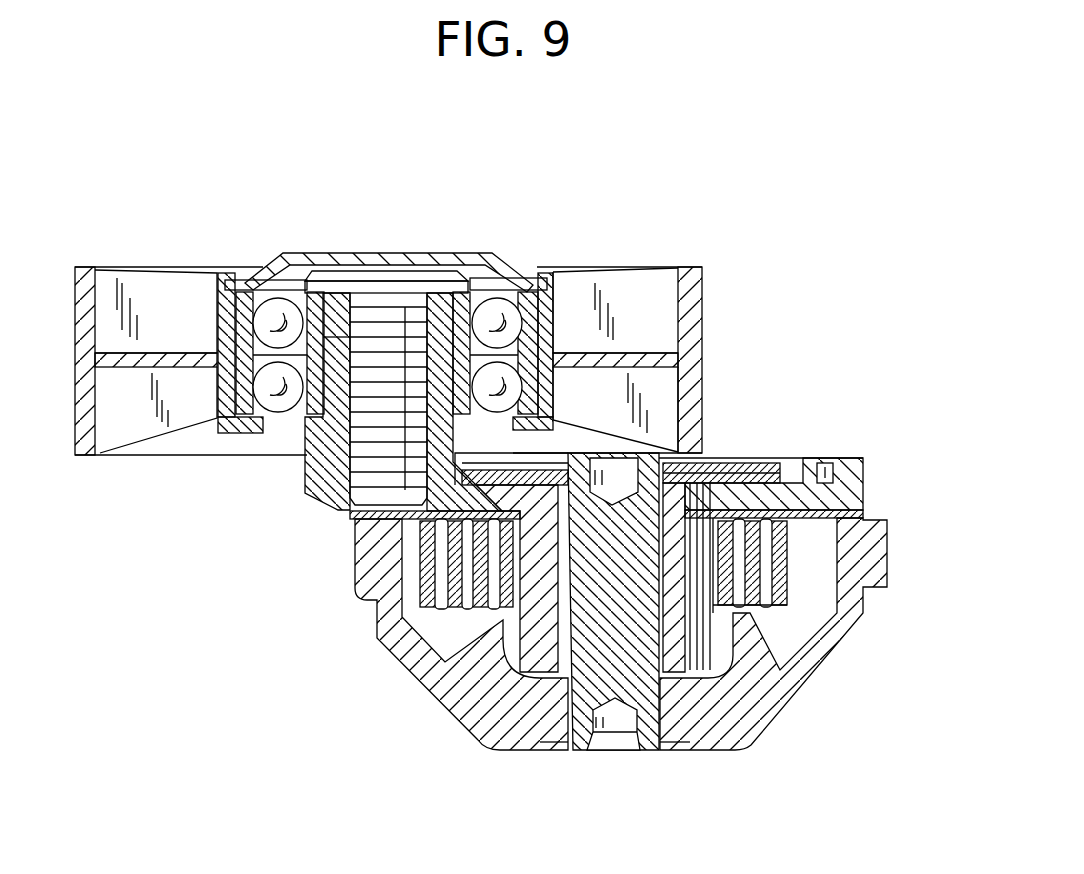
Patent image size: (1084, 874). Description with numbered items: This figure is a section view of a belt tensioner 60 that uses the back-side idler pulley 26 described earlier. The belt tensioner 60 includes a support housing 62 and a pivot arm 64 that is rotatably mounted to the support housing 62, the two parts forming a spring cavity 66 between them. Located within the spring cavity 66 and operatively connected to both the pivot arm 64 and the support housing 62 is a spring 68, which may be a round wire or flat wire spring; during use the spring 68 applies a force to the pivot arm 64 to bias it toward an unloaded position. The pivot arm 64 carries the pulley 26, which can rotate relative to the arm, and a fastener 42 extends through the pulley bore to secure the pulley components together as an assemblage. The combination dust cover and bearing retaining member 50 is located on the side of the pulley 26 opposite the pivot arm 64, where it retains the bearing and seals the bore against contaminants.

The idler pulley 26 is at (157, 283).
The fastener 42 is at (390, 296).
The combination dust cover and bearing retaining member 50 is at (340, 262).
The belt tensioner 60 is at (672, 208).
The support housing 62 is at (874, 553).
The pivot arm 64 is at (420, 530).
The spring cavity 66 is at (817, 530).
The spring 68 is at (777, 597).